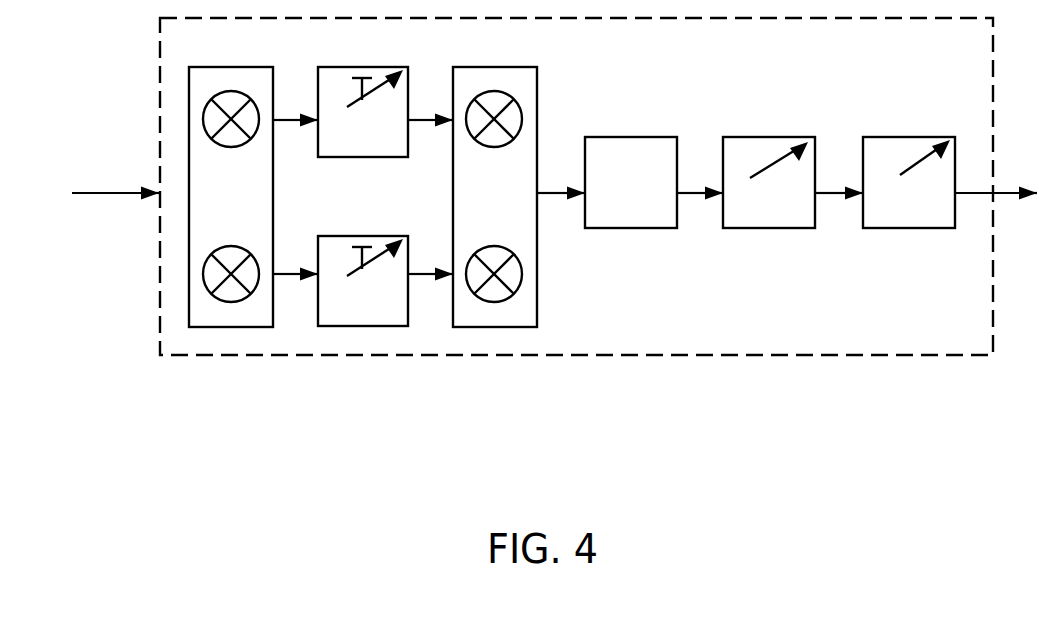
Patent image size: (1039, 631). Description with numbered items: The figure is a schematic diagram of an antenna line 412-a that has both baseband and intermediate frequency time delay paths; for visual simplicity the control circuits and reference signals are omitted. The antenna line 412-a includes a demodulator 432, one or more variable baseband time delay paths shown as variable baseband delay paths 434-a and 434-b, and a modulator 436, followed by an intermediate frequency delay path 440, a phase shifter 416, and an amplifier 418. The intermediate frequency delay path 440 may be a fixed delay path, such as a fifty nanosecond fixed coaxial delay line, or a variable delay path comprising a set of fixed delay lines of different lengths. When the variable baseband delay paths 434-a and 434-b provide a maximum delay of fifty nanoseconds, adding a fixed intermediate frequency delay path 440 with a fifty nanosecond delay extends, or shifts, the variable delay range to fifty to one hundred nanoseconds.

The antenna line 412-a is at (218, 44).
The demodulator 432 is at (214, 203).
The variable baseband delay path 434-a is at (338, 146).
The variable baseband delay path 434-b is at (338, 315).
The modulator 436 is at (477, 205).
The intermediate frequency delay path 440 is at (614, 221).
The phase shifter 416 is at (752, 221).
The amplifier 418 is at (892, 221).